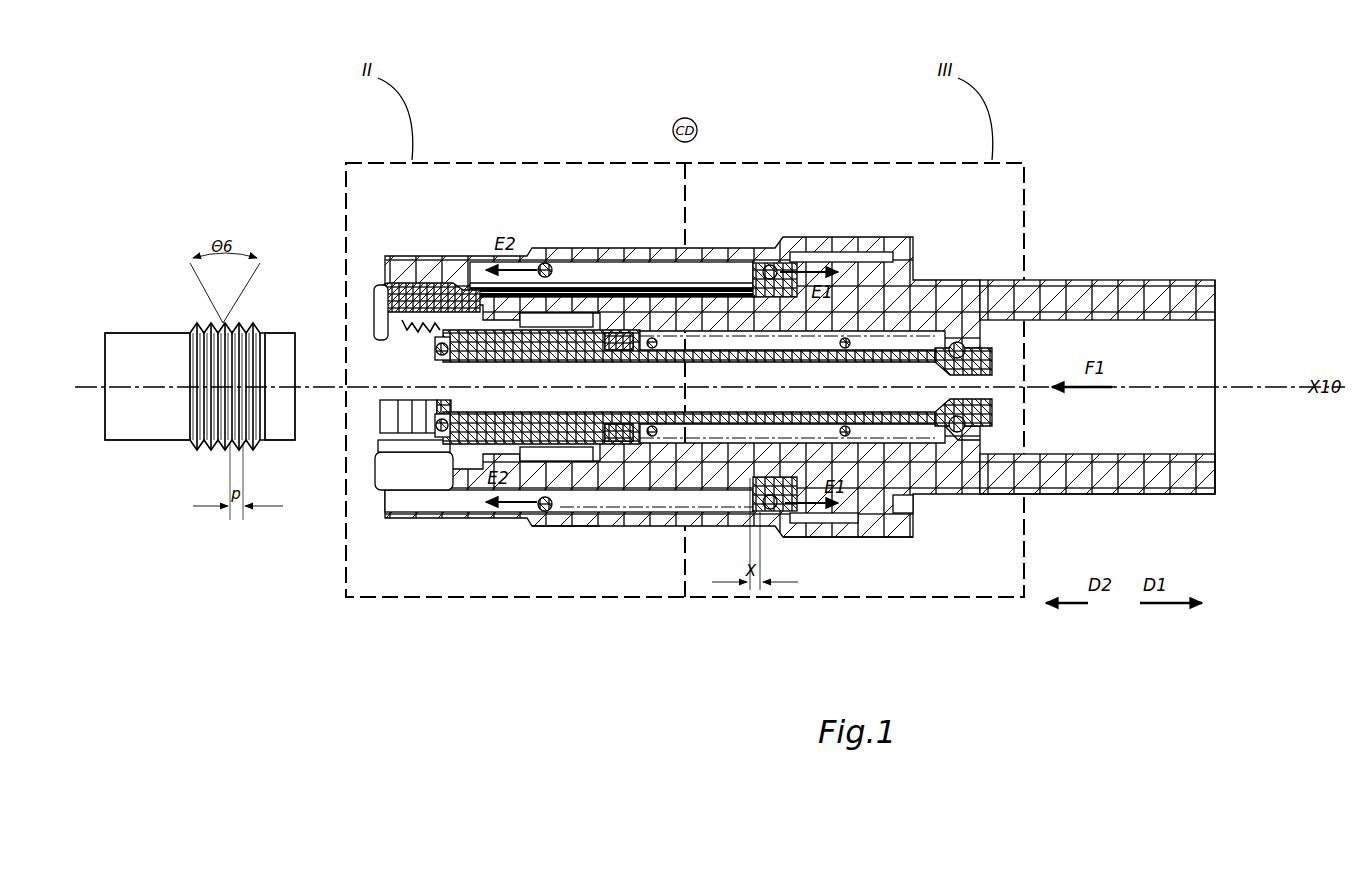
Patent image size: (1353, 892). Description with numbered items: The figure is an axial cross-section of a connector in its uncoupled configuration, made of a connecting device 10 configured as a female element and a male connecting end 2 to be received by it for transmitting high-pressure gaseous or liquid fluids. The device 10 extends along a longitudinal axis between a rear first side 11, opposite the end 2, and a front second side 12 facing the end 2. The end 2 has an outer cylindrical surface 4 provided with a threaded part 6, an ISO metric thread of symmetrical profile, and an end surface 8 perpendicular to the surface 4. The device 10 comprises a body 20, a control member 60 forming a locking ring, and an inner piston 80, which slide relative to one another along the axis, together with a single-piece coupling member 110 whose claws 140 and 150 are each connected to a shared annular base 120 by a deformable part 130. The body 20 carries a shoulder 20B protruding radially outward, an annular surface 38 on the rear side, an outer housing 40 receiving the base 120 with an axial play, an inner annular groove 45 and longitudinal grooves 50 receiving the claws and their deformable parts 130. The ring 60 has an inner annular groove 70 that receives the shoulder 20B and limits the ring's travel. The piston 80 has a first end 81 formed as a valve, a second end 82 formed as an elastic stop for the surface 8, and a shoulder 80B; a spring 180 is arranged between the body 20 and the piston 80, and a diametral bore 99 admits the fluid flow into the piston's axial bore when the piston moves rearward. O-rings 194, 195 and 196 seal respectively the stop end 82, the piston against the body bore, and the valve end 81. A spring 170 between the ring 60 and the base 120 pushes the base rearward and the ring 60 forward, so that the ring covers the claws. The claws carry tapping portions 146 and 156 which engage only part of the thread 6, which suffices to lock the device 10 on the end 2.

The male connecting end 2 is at (119, 293).
The outer cylindrical surface 4 is at (162, 450).
The threaded part 6 is at (207, 458).
The end surface 8 is at (299, 366).
The connecting device 10 is at (505, 114).
The first side 11 is at (1250, 516).
The second side 12 is at (278, 538).
The body 20 is at (1108, 298).
The shoulder 20B is at (877, 527).
The annular surface 38 is at (1221, 300).
The housing 40 is at (770, 470).
The annular groove 45 is at (577, 470).
The longitudinal grooves 50 is at (698, 304).
The control member 60 is at (590, 252).
The annular groove 70 is at (818, 527).
The inner piston 80 is at (887, 350).
The shoulder 80B is at (553, 440).
The first end 81 is at (983, 407).
The second end 82 is at (467, 440).
The cylindrical bore 99 is at (928, 434).
The coupling member 110 is at (431, 290).
The annular base 120 is at (803, 262).
The deformable part 130 is at (630, 260).
The claw 140 is at (378, 292).
The tapping portion 146 is at (399, 329).
The claw 150 is at (380, 414).
The tapping portion 156 is at (382, 442).
The spring 170 is at (727, 283).
The spring 180 is at (797, 347).
The O-ring 194 is at (447, 413).
The O-ring seal 195 is at (628, 352).
The O-ring 196 is at (967, 348).